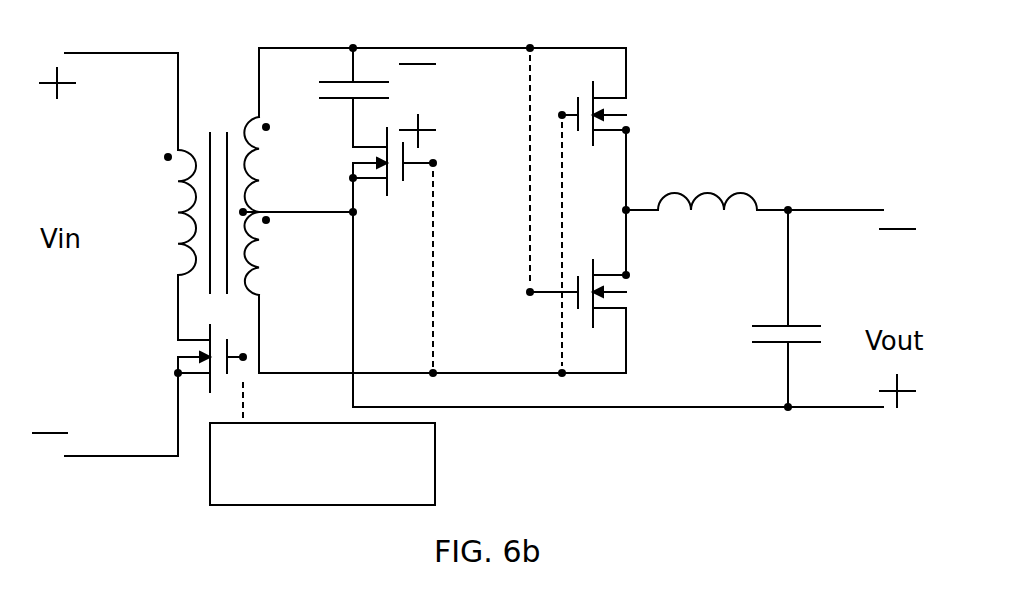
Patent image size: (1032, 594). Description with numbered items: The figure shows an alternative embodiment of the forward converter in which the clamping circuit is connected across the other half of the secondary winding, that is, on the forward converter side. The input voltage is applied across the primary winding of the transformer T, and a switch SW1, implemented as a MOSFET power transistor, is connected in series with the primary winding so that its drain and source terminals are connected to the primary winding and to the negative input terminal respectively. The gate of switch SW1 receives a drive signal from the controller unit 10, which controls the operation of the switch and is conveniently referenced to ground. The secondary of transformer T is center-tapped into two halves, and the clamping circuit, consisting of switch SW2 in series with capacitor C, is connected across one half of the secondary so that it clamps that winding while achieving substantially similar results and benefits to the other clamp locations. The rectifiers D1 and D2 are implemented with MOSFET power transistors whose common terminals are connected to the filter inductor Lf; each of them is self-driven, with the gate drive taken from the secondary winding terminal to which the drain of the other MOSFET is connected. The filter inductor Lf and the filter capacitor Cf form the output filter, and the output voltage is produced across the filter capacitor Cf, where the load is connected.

The controller unit 10 is at (437, 462).
The transformer T is at (213, 188).
The capacitor C is at (363, 105).
The switch SW1 is at (177, 373).
The switch SW2 is at (427, 248).
The diode D1 is at (576, 204).
The diode D2 is at (621, 223).
The filter inductor Lf is at (707, 223).
The filter capacitor Cf is at (762, 308).